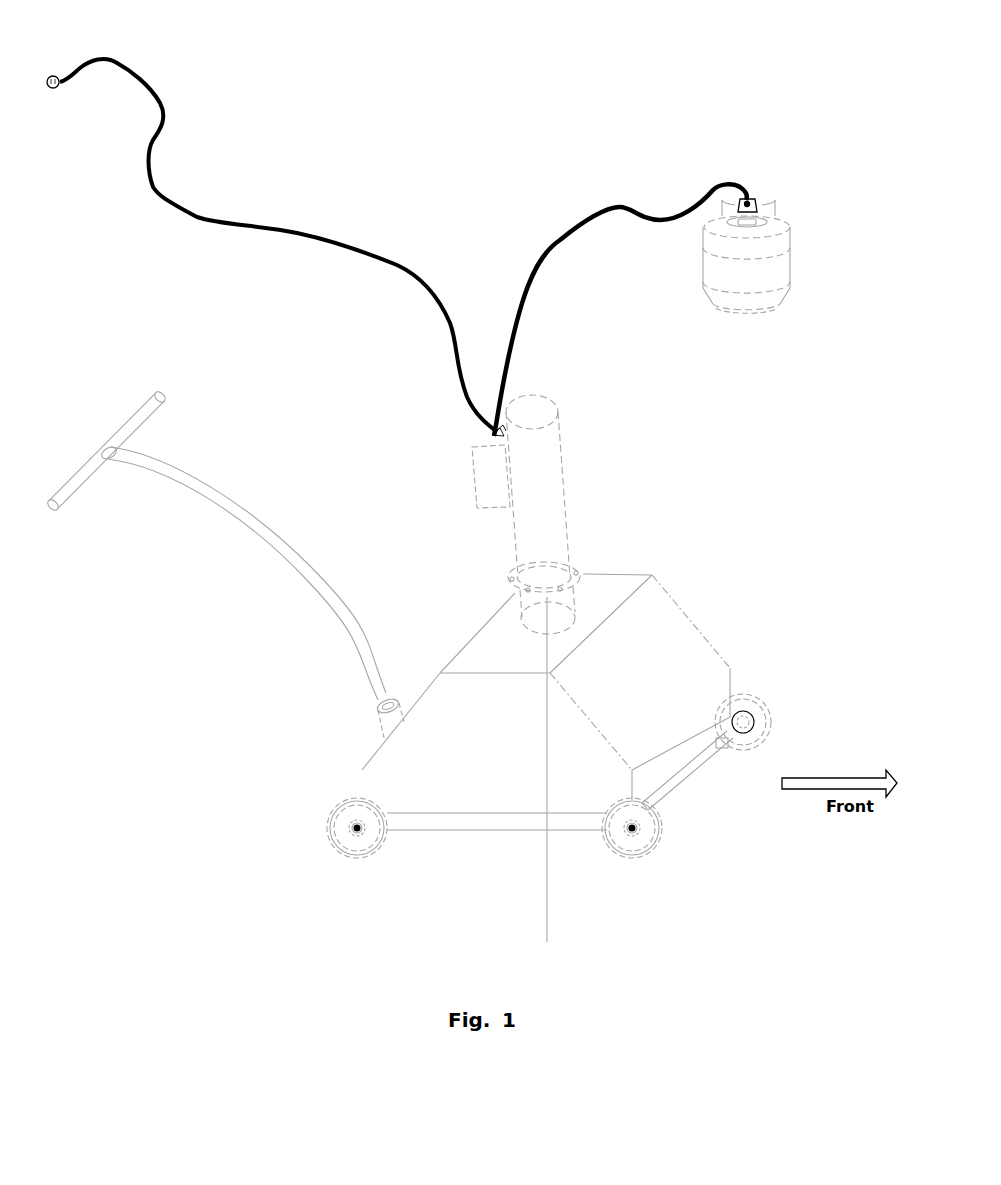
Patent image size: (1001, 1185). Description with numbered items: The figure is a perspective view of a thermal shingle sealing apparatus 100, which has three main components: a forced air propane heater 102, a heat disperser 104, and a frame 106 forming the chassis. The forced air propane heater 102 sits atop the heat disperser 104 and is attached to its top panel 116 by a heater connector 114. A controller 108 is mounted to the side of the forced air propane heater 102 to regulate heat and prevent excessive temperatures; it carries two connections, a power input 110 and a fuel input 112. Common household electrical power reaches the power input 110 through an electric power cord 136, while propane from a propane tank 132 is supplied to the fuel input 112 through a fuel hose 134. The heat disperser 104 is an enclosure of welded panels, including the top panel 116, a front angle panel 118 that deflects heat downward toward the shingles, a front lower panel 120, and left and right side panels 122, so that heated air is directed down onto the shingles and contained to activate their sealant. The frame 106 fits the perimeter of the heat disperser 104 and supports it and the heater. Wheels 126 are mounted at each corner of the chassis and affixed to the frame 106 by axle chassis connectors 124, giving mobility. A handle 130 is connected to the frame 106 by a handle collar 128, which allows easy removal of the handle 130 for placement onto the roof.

The thermal shingle sealing apparatus 100 is at (378, 152).
The forced air propane heater 102 is at (540, 490).
The heat disperser 104 is at (607, 711).
The frame 106 is at (452, 820).
The controller 108 is at (490, 476).
The power input 110 is at (496, 434).
The fuel input 112 is at (497, 430).
The heater connector 114 is at (550, 783).
The top panel 116 is at (607, 590).
The front angle panel 118 is at (648, 675).
The front lower panel 120 is at (678, 747).
The left and right side panels 122 is at (507, 752).
The axle chassis connectors 124 is at (728, 730).
The wheels 126 is at (347, 855).
The handle collar 128 is at (378, 725).
The handle 130 is at (258, 532).
The propane tank 132 is at (753, 263).
The fuel hose 134 is at (560, 242).
The electric power cord 136 is at (158, 197).